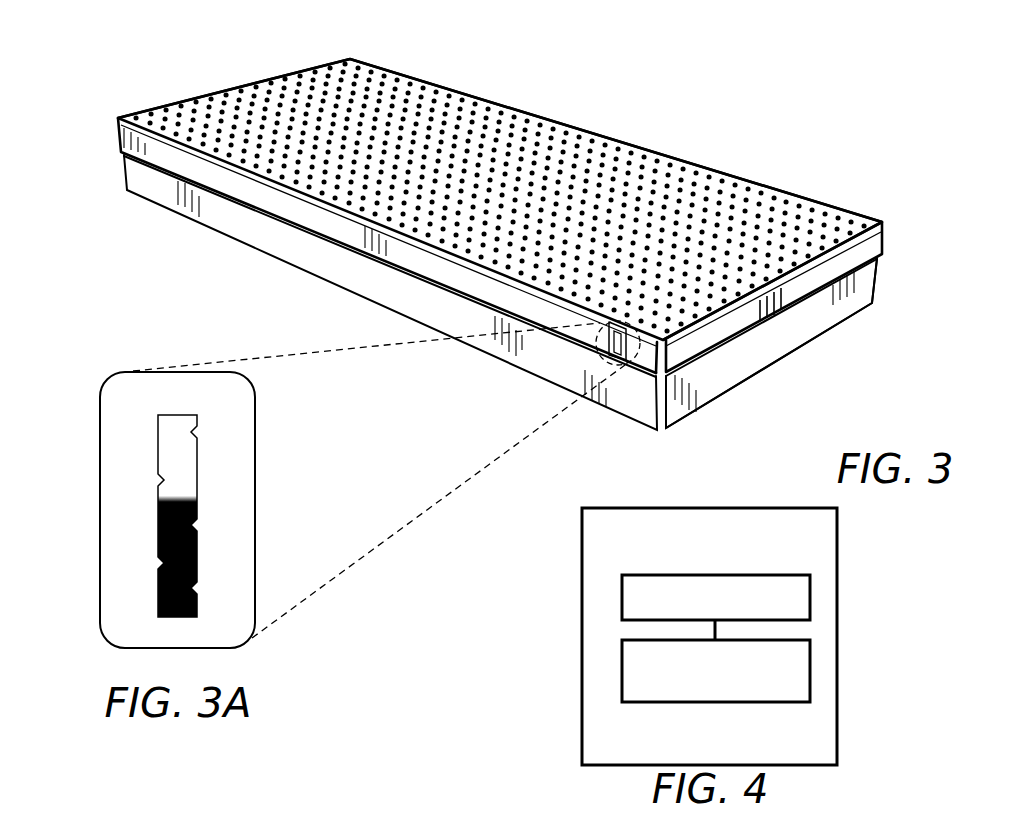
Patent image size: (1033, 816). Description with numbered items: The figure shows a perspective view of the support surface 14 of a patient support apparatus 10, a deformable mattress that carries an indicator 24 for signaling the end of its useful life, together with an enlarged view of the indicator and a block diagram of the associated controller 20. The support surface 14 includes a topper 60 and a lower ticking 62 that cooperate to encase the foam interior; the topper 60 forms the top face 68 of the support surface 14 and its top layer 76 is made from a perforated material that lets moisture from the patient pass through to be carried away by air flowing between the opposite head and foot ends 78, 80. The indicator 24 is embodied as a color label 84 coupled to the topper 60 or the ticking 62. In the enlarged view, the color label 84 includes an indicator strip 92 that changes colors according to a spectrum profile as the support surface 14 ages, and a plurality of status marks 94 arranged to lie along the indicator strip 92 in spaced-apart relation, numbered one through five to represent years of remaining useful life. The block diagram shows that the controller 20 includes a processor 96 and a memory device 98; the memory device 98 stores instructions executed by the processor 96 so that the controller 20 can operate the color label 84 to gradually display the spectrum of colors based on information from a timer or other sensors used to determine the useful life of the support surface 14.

In FIG. 3, the patient support apparatus 10 is at (882, 103).
In FIG. 3, the support surface 14 is at (632, 126).
In FIG. 4, the controller 20 is at (578, 636).
In FIG. 3A, the indicator 24 is at (117, 333).
In FIG. 3, the topper 60 is at (838, 203).
In FIG. 3, the lower ticking 62 is at (877, 283).
In FIG. 3, the top face 68 is at (650, 190).
In FIG. 3, the top layer 76 is at (500, 178).
In FIG. 3, the head end 78 is at (201, 95).
In FIG. 3, the foot end 80 is at (795, 292).
In FIG. 3, the color label 84 is at (214, 371).
In FIG. 3A, the indicator strip 92 is at (156, 432).
In FIG. 3A, the status marks 94 is at (217, 433).
In FIG. 4, the processor 96 is at (812, 598).
In FIG. 4, the memory device 98 is at (812, 670).